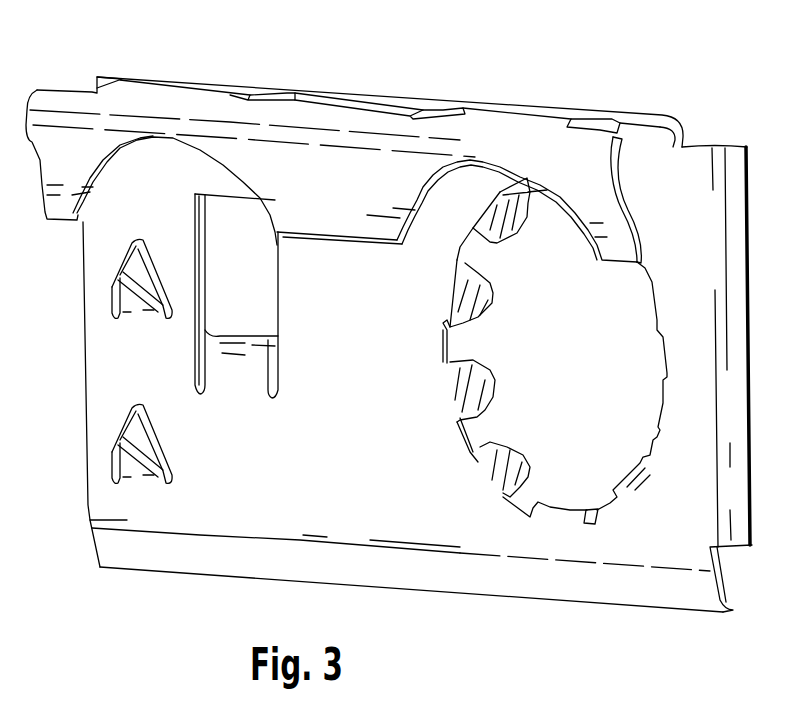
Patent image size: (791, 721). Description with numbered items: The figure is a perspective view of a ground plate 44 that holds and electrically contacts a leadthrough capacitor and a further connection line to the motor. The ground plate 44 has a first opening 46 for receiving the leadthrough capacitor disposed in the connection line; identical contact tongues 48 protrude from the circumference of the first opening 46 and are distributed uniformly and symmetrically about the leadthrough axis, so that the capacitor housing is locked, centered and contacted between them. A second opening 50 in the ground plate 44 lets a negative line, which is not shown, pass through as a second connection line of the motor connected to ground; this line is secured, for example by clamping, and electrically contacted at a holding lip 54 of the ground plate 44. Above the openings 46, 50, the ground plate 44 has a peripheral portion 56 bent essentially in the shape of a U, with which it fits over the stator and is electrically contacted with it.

The ground plate 44 is at (133, 600).
The first opening 46 is at (587, 333).
The contact tongues 48 is at (520, 458).
The second opening 50 is at (240, 252).
The holding lip 54 is at (240, 358).
The peripheral portion 56 is at (77, 105).